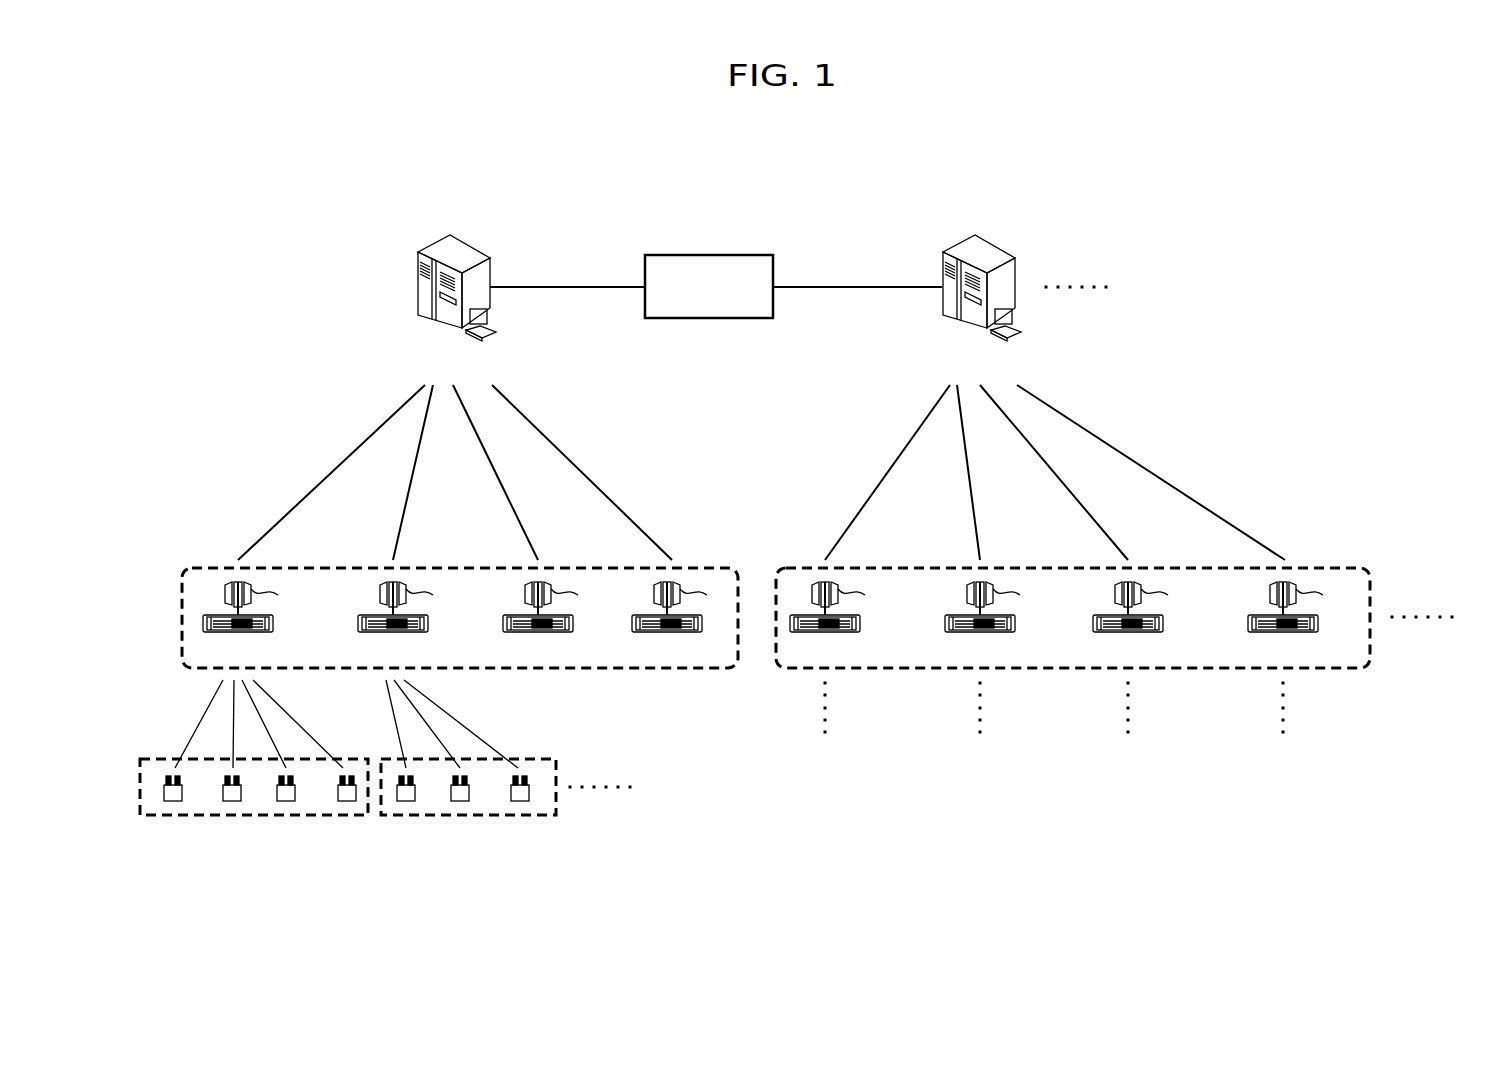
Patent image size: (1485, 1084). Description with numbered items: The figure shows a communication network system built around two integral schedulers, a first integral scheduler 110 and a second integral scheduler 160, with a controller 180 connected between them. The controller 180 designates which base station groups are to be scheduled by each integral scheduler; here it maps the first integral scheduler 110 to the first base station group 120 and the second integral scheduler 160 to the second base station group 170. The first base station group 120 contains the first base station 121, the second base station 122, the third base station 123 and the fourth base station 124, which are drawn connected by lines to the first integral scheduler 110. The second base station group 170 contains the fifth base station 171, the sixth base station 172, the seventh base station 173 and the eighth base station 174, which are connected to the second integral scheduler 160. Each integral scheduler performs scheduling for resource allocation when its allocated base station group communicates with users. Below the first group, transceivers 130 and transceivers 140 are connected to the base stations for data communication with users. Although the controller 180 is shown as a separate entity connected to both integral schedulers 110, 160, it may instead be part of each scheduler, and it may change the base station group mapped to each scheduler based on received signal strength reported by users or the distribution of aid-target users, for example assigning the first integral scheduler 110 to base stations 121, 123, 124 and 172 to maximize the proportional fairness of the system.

The integral scheduler 0 110 is at (468, 243).
The integral scheduler 1 160 is at (993, 243).
The controller 180 is at (710, 253).
The first base station group 120 is at (458, 596).
The first base station 121 is at (251, 589).
The second base station 122 is at (406, 589).
The third base station 123 is at (551, 589).
The fourth base station 124 is at (680, 589).
The second base station group 170 is at (1073, 596).
The fifth base station 171 is at (838, 589).
The sixth base station 172 is at (993, 589).
The seventh base station 173 is at (1141, 589).
The eighth base station 174 is at (1296, 589).
The transceivers 130 is at (163, 758).
The transceivers 140 is at (558, 758).